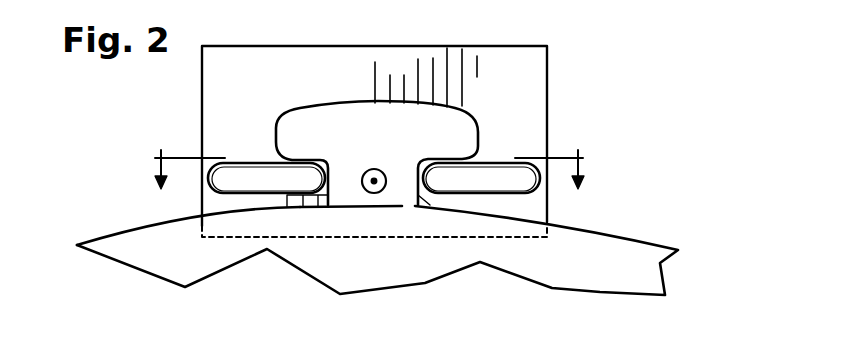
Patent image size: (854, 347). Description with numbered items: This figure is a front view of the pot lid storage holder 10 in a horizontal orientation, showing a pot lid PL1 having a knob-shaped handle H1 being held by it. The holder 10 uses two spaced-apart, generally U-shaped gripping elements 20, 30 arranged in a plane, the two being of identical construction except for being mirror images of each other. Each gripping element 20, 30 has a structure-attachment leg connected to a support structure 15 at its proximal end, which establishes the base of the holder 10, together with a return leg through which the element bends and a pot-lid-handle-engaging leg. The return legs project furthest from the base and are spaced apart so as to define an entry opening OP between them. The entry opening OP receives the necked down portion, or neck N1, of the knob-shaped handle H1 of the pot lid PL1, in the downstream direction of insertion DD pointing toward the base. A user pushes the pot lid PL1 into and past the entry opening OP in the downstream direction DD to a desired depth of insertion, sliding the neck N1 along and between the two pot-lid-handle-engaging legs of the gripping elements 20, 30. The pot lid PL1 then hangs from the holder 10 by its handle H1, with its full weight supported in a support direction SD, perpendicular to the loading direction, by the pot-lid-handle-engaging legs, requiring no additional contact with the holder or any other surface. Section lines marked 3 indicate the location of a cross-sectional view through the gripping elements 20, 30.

The pot lid storage holder 10 is at (610, 61).
The support structure 15 is at (536, 101).
The gripping element 20 is at (273, 150).
The gripping element 30 is at (480, 160).
The knob-shaped handle H1 is at (323, 122).
The downstream direction of insertion DD is at (374, 168).
The neck N1 is at (378, 206).
The entry opening OP is at (405, 198).
The pot lid PL1 is at (612, 243).
The support direction SD is at (373, 247).
The section line 3- 3 is at (369, 183).